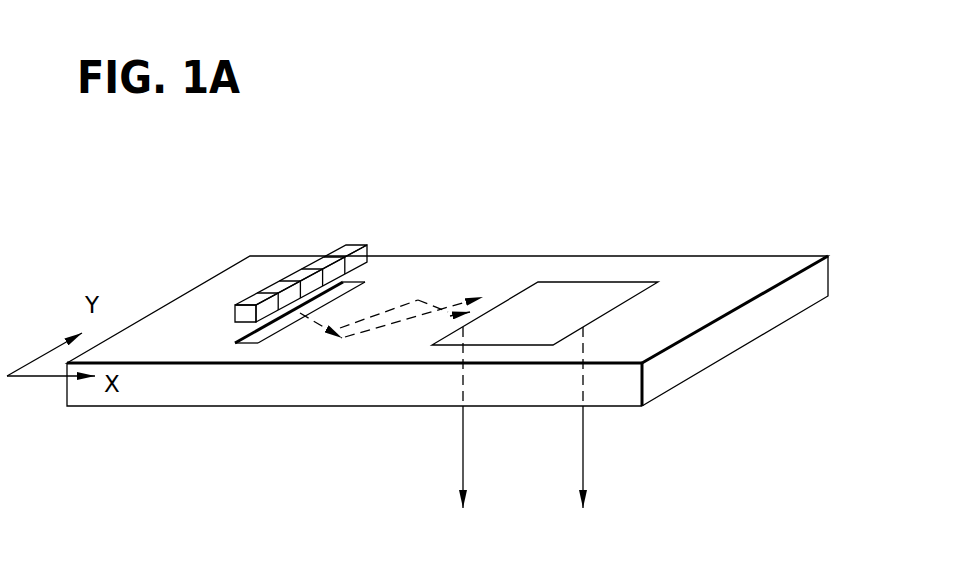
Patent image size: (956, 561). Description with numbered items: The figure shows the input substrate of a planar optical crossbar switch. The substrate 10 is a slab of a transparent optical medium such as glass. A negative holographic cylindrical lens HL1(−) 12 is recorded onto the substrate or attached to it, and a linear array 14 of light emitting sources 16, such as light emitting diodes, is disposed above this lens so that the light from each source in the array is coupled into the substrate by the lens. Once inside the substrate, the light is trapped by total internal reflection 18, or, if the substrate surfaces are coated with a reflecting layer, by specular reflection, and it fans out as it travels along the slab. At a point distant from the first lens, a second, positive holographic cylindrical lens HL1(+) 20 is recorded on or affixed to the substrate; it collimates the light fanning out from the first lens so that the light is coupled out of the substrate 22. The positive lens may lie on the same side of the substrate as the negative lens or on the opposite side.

The substrate 10 is at (432, 278).
The negative holographic cylindrical lens HL1(−) 12 is at (262, 347).
The linear array 14 is at (368, 240).
The light emitting source 16 is at (302, 273).
The total internal reflection 18 is at (397, 333).
The positive holographic cylindrical lens HL1(+) 20 is at (606, 328).
The coupling out of the substrate 22 is at (532, 433).